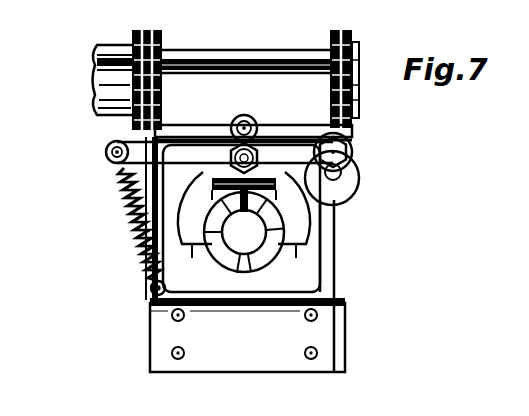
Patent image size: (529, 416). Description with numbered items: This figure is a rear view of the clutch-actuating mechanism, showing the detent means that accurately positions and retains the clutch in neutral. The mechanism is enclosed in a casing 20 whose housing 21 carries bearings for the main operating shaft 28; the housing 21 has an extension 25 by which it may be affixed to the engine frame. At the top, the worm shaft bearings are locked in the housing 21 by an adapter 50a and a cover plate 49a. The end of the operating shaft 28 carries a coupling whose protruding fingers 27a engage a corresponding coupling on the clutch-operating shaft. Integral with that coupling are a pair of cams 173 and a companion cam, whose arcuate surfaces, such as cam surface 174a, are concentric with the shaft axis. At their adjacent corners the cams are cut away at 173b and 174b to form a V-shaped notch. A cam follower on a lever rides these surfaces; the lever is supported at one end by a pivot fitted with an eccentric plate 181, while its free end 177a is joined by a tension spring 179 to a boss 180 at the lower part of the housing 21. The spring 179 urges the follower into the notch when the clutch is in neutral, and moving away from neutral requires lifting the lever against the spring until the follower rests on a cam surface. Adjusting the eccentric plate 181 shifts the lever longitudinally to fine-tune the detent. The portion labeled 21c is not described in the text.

The adapter 50a is at (146, 32).
The cover plate 49a is at (350, 40).
The free end of lever 177a is at (106, 152).
The cut-away corner of cam 173b is at (231, 160).
The cut-away corner of cam 174b is at (262, 166).
The eccentric plate 181 is at (358, 180).
The cam surface 174a is at (334, 215).
The housing 21 is at (336, 243).
The casing 20 is at (367, 274).
The extension 25 is at (336, 328).
The main operating shaft 28 is at (258, 238).
The protruding fingers 27a is at (268, 214).
The frame portion 21c is at (220, 214).
The cam 173 is at (188, 198).
The tension spring 179 is at (135, 232).
The boss 180 is at (150, 289).